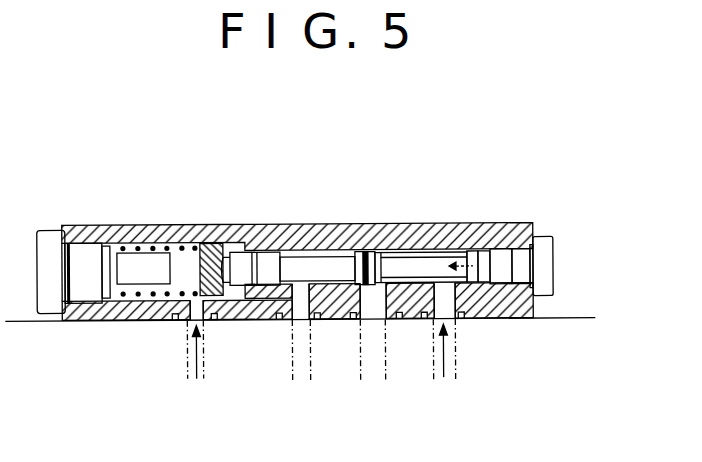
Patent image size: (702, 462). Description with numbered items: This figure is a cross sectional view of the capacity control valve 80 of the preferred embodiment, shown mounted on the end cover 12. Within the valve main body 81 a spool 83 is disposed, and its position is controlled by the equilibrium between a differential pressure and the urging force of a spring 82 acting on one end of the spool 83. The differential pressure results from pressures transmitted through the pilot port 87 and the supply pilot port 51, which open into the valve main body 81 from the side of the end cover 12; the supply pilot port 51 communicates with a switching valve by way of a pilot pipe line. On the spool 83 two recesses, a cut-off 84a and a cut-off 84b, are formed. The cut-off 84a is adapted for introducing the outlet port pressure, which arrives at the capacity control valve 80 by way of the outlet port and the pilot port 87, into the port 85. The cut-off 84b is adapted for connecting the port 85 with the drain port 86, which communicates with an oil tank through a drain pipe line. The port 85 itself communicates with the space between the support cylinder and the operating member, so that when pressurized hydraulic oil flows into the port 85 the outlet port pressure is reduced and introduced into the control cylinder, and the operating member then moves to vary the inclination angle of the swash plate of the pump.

The capacity control valve 80 is at (331, 291).
The valve main body 81 is at (497, 228).
The spring 82 is at (150, 245).
The spool 83 is at (376, 251).
The cut-off 84a is at (433, 252).
The cut-off 84b is at (320, 250).
The port 85 is at (382, 322).
The drain port 86 is at (310, 322).
The pilot port 87 is at (456, 365).
The supply pilot port 51 is at (186, 356).
The end cover 12 is at (629, 366).